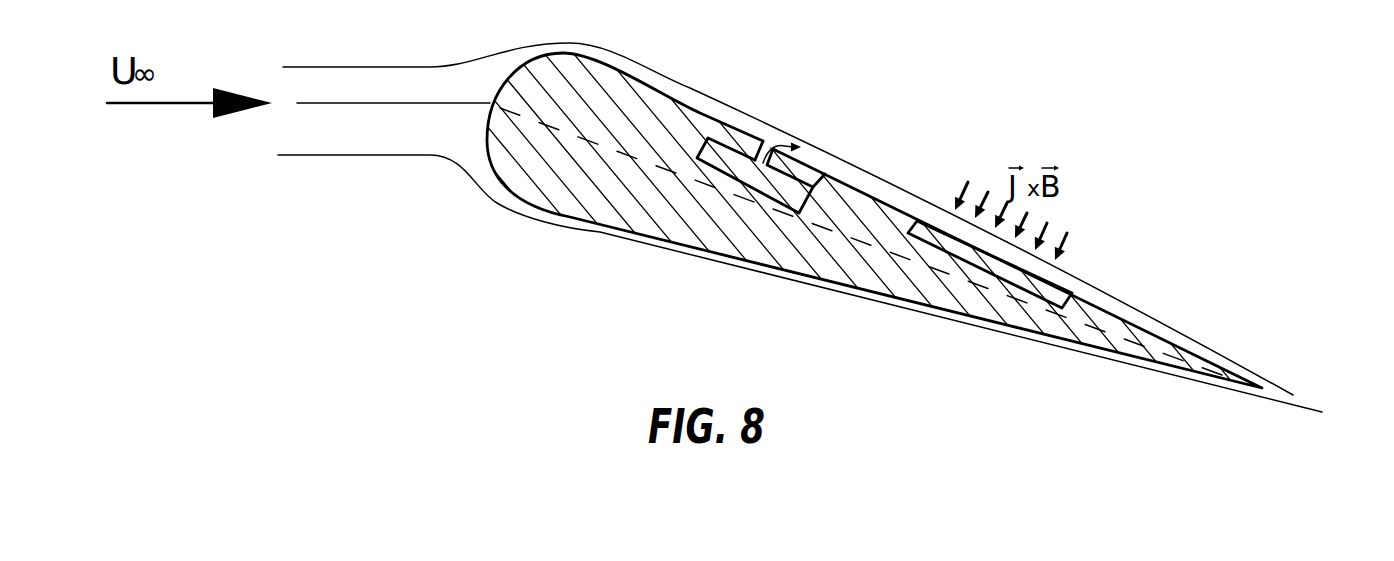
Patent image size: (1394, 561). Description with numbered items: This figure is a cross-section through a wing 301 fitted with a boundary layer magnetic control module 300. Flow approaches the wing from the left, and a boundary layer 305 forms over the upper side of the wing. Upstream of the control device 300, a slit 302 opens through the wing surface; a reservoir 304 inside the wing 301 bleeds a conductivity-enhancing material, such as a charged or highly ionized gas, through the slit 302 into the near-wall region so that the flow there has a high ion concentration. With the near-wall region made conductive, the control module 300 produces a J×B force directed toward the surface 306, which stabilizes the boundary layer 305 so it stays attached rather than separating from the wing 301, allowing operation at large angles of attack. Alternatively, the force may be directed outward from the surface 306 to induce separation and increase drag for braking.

The boundary layer magnetic control module 300 is at (980, 267).
The wing 301 is at (585, 203).
The slit 302 is at (768, 142).
The reservoir 304 is at (745, 186).
The boundary layer 305 is at (890, 177).
The surface 306 is at (818, 165).